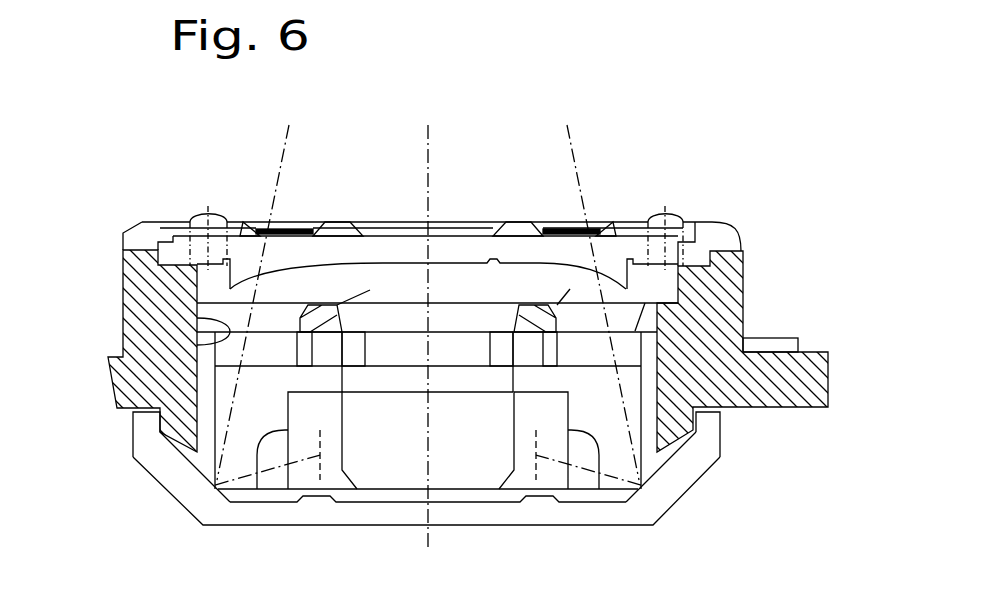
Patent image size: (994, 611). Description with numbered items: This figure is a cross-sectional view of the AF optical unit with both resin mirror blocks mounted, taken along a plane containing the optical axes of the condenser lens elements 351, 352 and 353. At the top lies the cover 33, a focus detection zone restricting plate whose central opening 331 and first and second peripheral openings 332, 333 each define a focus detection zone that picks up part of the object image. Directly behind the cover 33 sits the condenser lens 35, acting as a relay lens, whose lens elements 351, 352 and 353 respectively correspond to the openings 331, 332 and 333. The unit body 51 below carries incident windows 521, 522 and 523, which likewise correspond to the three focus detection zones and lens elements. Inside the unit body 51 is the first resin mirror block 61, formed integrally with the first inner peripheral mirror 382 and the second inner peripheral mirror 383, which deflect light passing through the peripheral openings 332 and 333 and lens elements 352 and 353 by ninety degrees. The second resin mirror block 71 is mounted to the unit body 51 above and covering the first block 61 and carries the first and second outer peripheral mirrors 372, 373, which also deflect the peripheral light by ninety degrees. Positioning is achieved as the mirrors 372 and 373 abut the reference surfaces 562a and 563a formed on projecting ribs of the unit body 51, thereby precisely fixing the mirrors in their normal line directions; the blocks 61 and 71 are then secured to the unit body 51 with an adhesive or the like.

The cover 33 is at (707, 225).
The central opening 331 is at (495, 225).
The first peripheral opening 332 is at (592, 236).
The second peripheral opening 333 is at (318, 240).
The condenser lens 35 is at (690, 237).
The condenser lens element 351 is at (370, 290).
The condenser lens element 352 is at (600, 283).
The condenser lens element 353 is at (258, 262).
The unit body 51 is at (732, 290).
The incident window 521 is at (385, 258).
The incident window 522 is at (622, 287).
The incident window 523 is at (227, 333).
The reference surface 562a is at (705, 455).
The reference surface 563a is at (153, 450).
The first resin mirror block 61 is at (472, 460).
The second resin mirror block 71 is at (640, 515).
The first outer peripheral mirror 372 is at (660, 465).
The second outer peripheral mirror 373 is at (200, 470).
The first inner peripheral mirror 382 is at (587, 480).
The second inner peripheral mirror 383 is at (252, 480).